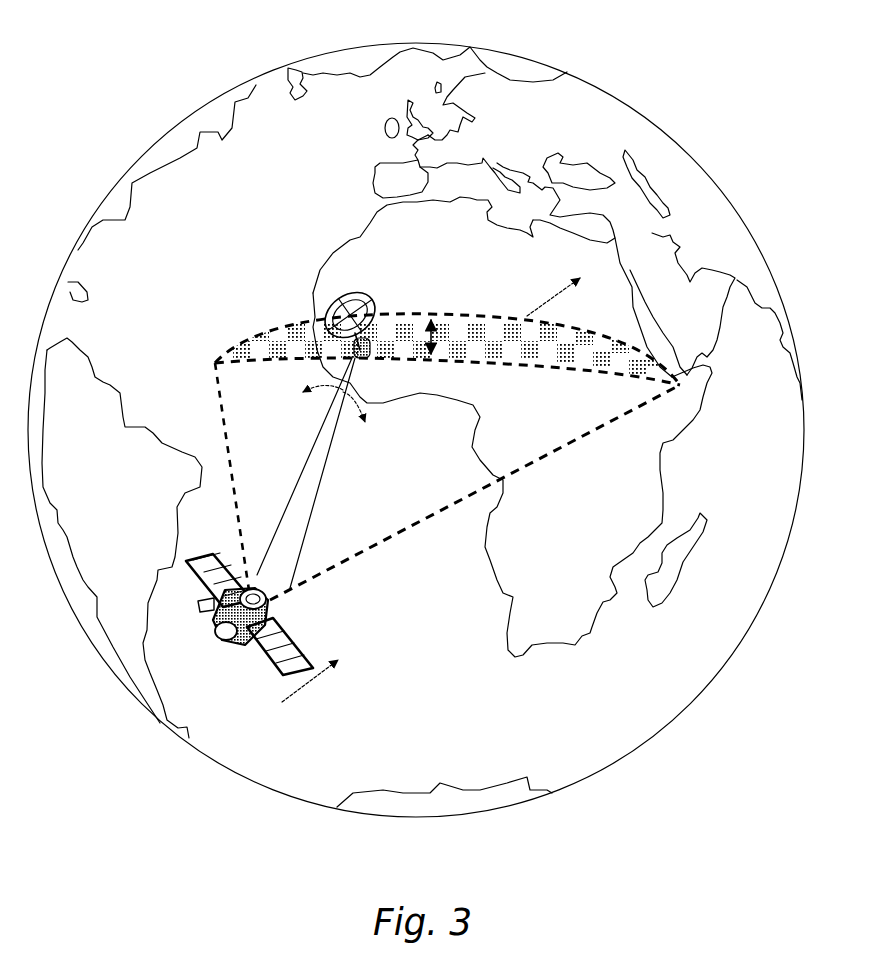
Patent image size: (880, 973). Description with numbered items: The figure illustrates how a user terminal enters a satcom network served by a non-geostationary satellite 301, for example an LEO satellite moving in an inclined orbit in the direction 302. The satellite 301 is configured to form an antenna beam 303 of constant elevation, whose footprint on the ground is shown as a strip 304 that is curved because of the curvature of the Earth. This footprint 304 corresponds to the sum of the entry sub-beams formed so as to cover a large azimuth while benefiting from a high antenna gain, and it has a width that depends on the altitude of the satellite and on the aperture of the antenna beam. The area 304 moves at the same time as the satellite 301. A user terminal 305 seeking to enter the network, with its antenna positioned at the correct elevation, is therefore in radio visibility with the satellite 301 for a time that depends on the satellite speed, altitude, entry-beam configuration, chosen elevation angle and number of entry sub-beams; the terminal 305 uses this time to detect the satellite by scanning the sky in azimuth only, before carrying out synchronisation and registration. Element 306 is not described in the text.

The non-geostationary satellite 301 is at (217, 648).
The direction of satellite movement 302 is at (317, 690).
The antenna beam 303 is at (388, 547).
The strip (footprint on the ground) 304 is at (481, 316).
The user terminal 305 is at (343, 303).
The beam path 306 is at (224, 420).